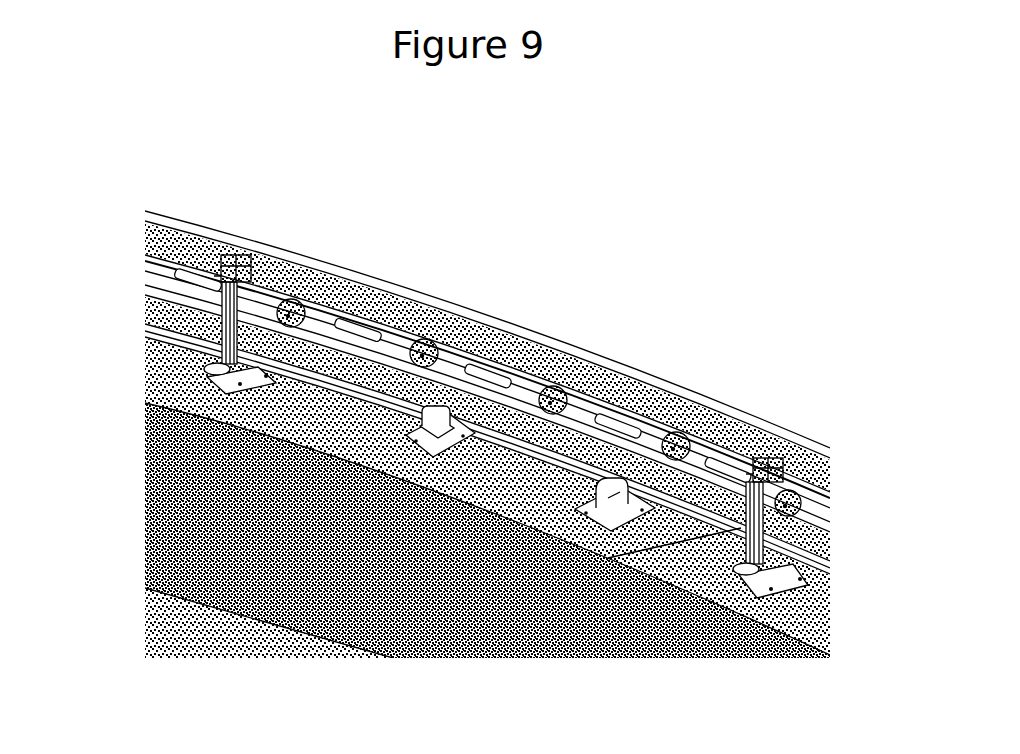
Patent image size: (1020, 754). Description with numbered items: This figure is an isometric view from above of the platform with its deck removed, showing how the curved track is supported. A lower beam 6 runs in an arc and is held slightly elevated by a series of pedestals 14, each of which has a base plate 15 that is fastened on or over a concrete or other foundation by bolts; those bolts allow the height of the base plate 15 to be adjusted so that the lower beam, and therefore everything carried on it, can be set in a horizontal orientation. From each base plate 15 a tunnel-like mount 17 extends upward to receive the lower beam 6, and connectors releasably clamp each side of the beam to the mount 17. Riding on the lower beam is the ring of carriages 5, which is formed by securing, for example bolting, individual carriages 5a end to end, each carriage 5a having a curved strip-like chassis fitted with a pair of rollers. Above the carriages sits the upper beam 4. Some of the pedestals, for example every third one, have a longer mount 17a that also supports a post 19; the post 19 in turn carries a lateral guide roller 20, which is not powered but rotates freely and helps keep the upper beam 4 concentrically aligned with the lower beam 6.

The upper beam 4 is at (257, 240).
The ring of carriages 5 is at (573, 405).
The carriage 5a is at (633, 432).
The lower beam 6 is at (300, 347).
The pedestal 14 is at (424, 449).
The base plate 15 is at (593, 500).
The tunnel-like mount 17 is at (400, 415).
The longer mount 17a is at (230, 360).
The post 19 is at (748, 528).
The lateral guide roller 20 is at (773, 463).